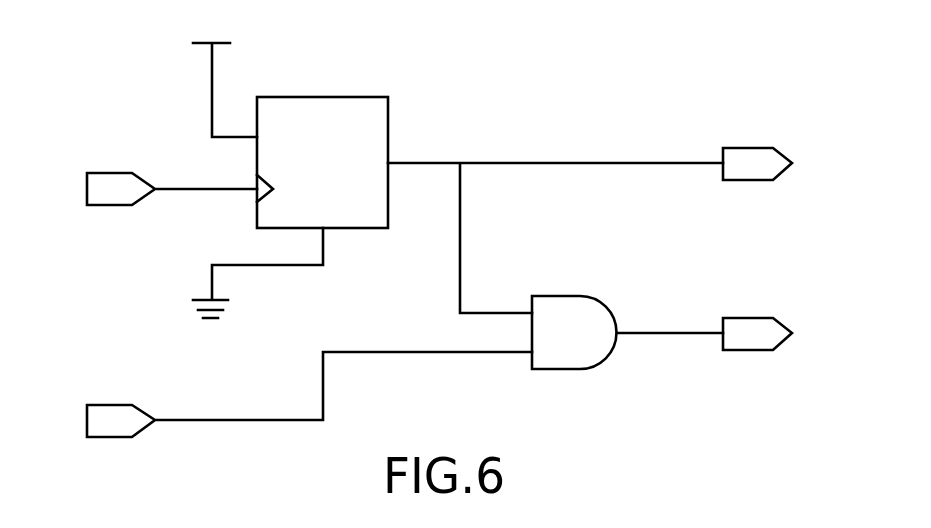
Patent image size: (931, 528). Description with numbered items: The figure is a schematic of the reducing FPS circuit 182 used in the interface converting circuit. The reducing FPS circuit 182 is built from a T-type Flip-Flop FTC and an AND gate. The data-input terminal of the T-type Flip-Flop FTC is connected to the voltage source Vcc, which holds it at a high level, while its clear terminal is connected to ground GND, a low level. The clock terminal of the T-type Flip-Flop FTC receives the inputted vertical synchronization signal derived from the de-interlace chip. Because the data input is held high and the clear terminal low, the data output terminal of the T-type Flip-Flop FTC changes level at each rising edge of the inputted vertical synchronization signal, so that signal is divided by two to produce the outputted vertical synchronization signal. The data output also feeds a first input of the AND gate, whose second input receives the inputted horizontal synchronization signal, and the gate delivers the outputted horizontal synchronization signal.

The reducing FPS circuit 182 is at (653, 55).
The T-type Flip-Flop FTC is at (340, 97).
The voltage source Vcc is at (223, 75).
The ground GND is at (251, 291).